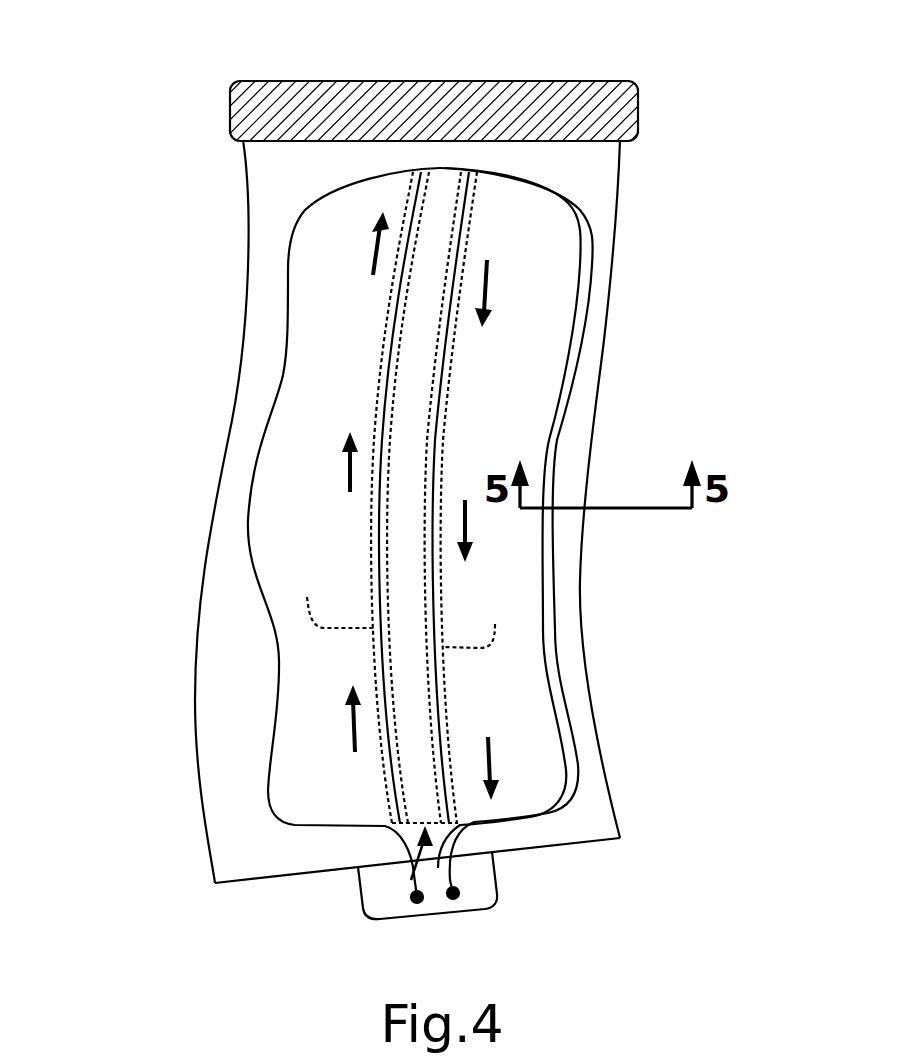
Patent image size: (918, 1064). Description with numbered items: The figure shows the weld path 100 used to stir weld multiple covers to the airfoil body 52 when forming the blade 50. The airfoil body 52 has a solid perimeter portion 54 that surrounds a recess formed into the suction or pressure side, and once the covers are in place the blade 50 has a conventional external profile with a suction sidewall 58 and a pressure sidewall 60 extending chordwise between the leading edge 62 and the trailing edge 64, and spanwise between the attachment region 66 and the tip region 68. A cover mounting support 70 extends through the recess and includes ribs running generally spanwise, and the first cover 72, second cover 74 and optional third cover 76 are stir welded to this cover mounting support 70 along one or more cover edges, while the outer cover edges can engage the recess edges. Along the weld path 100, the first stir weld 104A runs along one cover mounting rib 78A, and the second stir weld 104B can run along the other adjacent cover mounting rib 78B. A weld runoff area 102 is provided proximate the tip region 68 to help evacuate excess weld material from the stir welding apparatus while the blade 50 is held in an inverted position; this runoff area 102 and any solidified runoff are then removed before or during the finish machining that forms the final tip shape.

The blade 50 is at (693, 108).
The airfoil body 52 is at (210, 237).
The solid perimeter portion 54 is at (222, 706).
The suction sidewall 58 is at (287, 172).
The pressure sidewall 60 is at (650, 251).
The leading edge 62 is at (247, 318).
The trailing edge 64 is at (603, 348).
The attachment region 66 is at (437, 64).
The tip region 68 is at (224, 898).
The cover mounting support 70 is at (413, 865).
The first cover 72 is at (309, 524).
The second cover 74 is at (522, 572).
The third cover 76 is at (397, 472).
The cover mounting rib 78A is at (387, 363).
The cover mounting rib 78B is at (447, 392).
The weld path 100 is at (352, 258).
The weld runoff area 102 is at (358, 940).
The first stir weld 104A is at (326, 599).
The second stir weld 104B is at (485, 623).